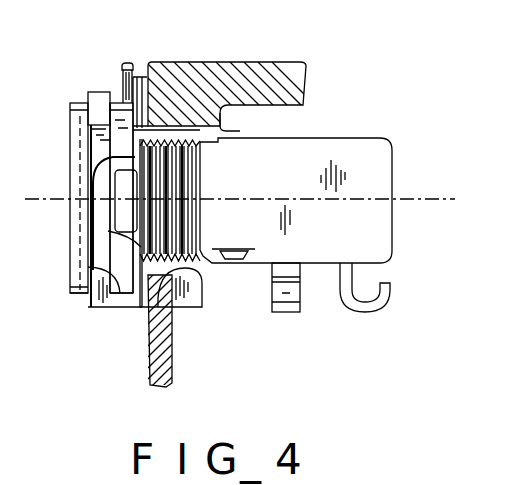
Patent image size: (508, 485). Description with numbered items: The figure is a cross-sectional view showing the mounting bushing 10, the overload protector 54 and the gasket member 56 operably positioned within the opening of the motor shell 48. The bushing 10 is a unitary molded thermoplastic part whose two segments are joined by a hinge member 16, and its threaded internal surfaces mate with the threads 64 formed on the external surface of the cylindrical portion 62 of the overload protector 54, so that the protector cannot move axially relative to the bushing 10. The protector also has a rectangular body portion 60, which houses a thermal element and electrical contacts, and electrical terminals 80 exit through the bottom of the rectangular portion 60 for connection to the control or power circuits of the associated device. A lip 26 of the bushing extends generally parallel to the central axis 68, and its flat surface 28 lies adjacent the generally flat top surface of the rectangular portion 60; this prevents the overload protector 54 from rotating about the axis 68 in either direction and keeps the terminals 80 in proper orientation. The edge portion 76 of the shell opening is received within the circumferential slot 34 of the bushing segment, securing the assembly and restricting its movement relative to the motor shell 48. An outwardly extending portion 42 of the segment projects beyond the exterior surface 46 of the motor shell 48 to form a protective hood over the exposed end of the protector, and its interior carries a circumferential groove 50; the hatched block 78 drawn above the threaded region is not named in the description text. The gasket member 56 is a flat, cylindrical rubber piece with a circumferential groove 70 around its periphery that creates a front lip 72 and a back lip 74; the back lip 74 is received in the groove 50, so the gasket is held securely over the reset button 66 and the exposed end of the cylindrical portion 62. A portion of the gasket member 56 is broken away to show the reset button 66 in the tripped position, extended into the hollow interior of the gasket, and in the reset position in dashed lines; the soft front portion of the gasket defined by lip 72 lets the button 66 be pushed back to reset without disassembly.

The mounting bushing 10 is at (111, 46).
The hinge member 16 is at (129, 62).
The lip 26 is at (240, 131).
The flat surface 28 is at (203, 141).
The circumferential slot 34 is at (173, 320).
The outwardly extending portion 42 is at (88, 308).
The exterior surface 46 is at (148, 356).
The motor shell 48 is at (167, 348).
The circumferential groove 50 is at (88, 273).
The overload protector 54 is at (382, 128).
The gasket member 56 is at (64, 177).
The rectangular body portion 60 is at (373, 177).
The cylindrical portion 62 is at (108, 231).
The threads 64 is at (203, 184).
The reset button 66 is at (115, 212).
The central axis 68 is at (438, 200).
The circumferential groove 70 is at (100, 142).
The front lip 72 is at (80, 103).
The back lip 74 is at (120, 100).
The edge portion 76 is at (204, 287).
The housing block 78 is at (200, 61).
The electrical terminals 80 is at (300, 308).